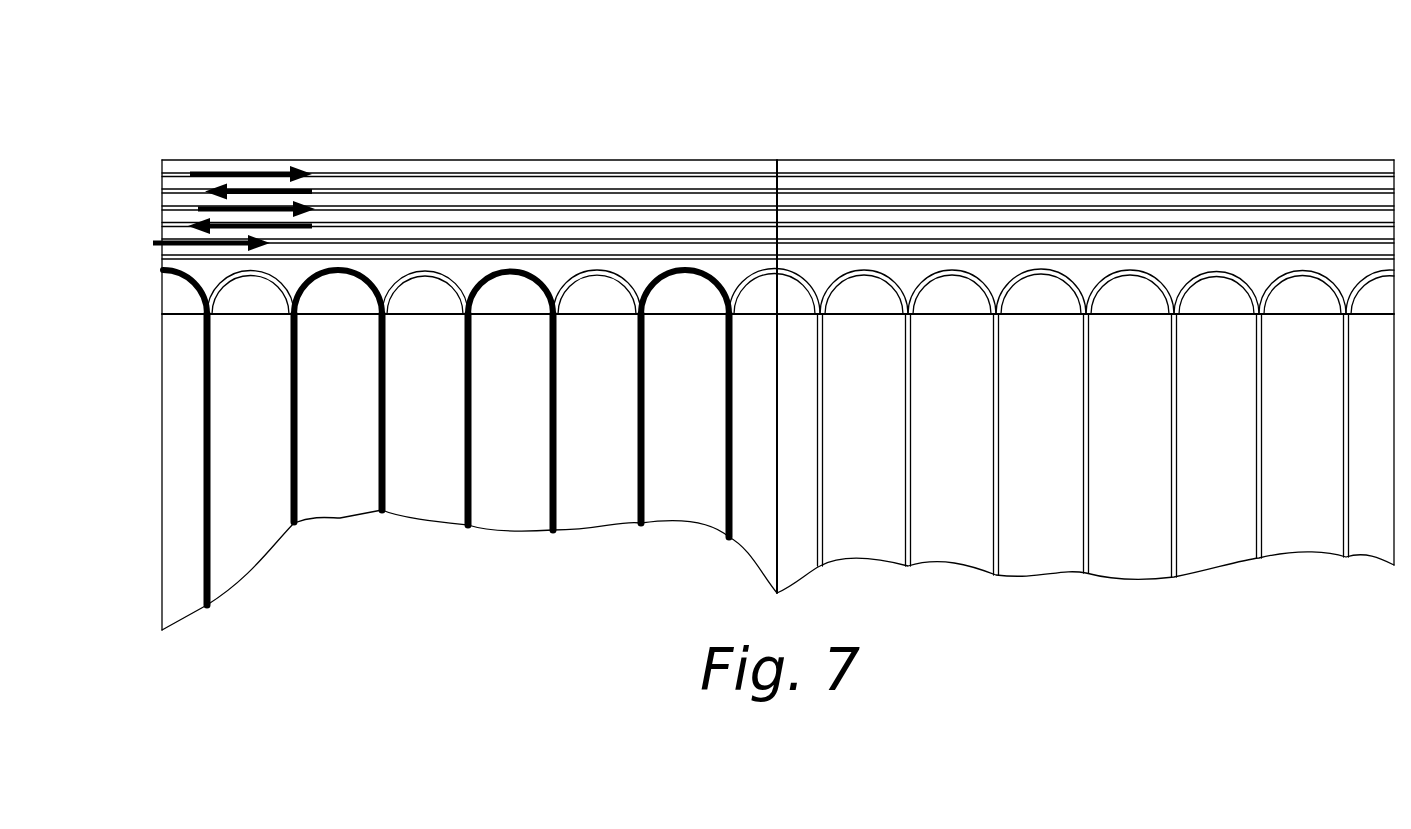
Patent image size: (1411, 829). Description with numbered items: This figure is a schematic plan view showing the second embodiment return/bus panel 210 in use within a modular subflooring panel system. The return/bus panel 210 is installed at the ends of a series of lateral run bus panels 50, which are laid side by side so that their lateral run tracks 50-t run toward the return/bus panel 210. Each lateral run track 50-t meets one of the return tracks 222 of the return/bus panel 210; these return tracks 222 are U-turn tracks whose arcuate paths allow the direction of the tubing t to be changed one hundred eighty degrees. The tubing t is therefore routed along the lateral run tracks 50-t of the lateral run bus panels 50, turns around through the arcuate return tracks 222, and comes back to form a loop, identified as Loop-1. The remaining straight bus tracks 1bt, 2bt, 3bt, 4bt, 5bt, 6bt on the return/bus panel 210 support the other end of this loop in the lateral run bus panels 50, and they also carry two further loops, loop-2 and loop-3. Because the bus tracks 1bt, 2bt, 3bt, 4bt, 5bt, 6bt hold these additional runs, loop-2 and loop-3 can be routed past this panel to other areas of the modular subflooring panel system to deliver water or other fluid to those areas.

The return/bus panel 210 is at (495, 160).
The return tracks 222 is at (243, 274).
The lateral run bus panels 50 is at (345, 502).
The lateral run tracks 50-t is at (385, 477).
The tubing t is at (209, 432).
The bus track 1bt is at (160, 174).
The bus track 2bt is at (160, 190).
The bus track 3bt is at (160, 207).
The bus track 4bt is at (160, 224).
The bus track 5bt is at (160, 246).
The bus track 6bt is at (160, 263).
The loop Loop-1 is at (181, 224).
The loop loop-2 is at (252, 214).
The loop loop-3 is at (284, 166).